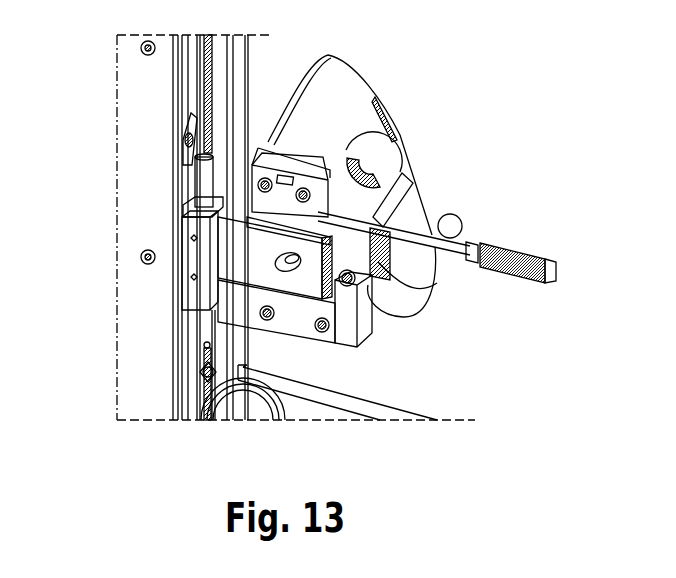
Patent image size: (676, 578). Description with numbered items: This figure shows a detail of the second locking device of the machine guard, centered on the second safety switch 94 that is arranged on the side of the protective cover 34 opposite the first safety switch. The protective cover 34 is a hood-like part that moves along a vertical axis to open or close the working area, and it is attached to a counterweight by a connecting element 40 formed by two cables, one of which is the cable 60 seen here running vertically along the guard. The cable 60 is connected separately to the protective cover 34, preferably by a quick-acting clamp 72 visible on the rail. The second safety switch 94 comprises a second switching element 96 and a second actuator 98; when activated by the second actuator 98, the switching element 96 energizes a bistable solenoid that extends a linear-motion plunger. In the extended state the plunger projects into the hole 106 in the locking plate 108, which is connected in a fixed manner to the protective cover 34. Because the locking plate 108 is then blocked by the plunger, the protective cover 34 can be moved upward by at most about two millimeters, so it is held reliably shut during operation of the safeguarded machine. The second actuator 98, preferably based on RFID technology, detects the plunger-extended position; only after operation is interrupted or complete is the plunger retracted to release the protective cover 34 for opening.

The protective cover 34 is at (135, 125).
The connecting element 40 is at (215, 66).
The cable 60 is at (226, 227).
The quick-acting clamp 72 is at (207, 183).
The second safety switch 94 is at (428, 160).
The second switching element 96 is at (310, 177).
The second actuator 98 is at (400, 262).
The hole 106 is at (290, 268).
The locking plate 108 is at (237, 242).